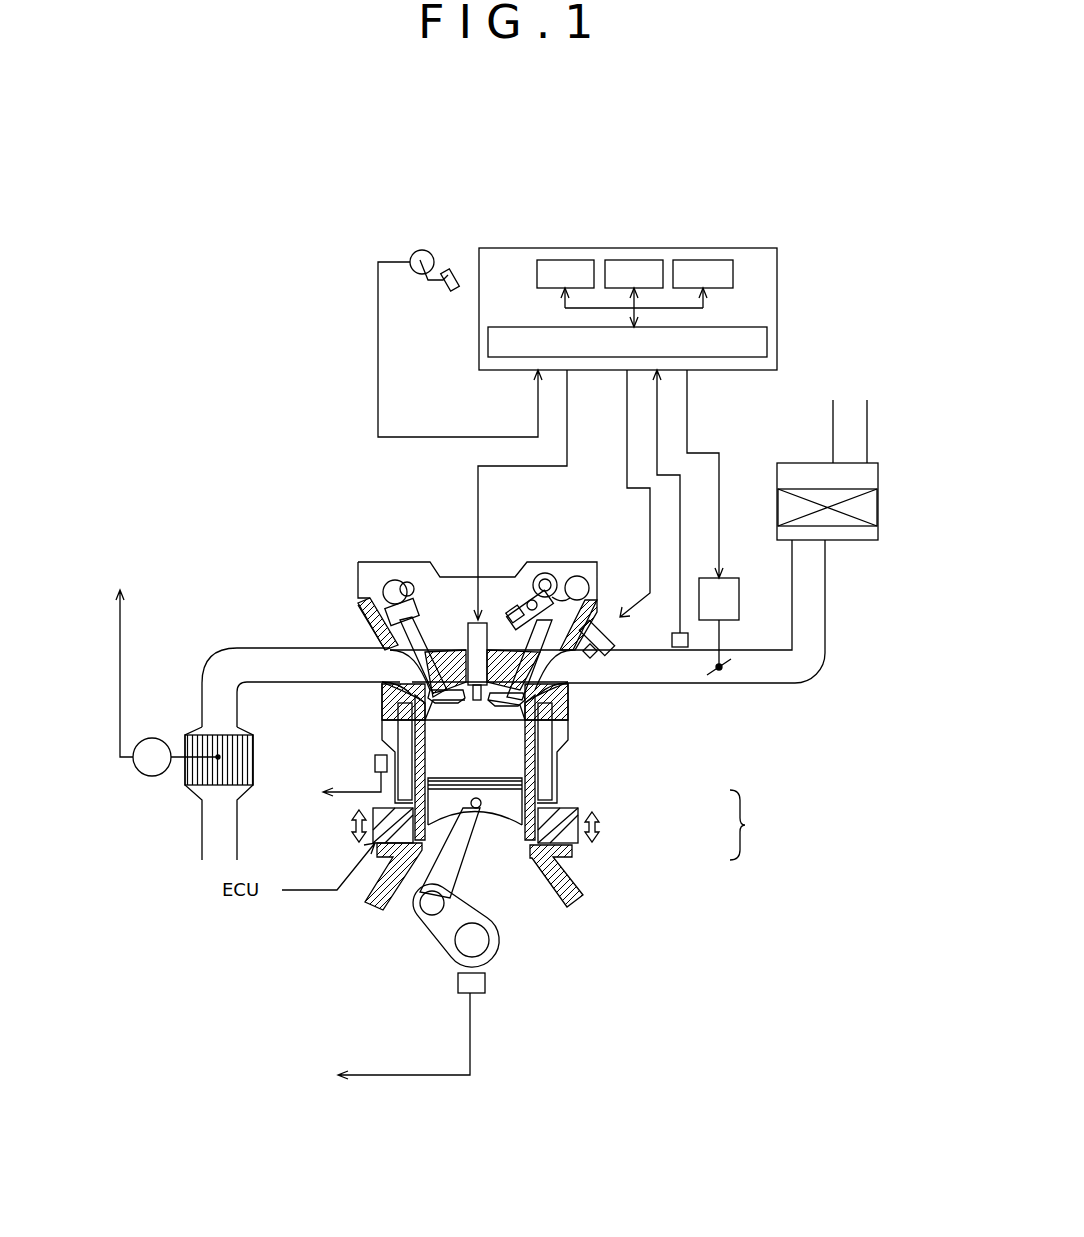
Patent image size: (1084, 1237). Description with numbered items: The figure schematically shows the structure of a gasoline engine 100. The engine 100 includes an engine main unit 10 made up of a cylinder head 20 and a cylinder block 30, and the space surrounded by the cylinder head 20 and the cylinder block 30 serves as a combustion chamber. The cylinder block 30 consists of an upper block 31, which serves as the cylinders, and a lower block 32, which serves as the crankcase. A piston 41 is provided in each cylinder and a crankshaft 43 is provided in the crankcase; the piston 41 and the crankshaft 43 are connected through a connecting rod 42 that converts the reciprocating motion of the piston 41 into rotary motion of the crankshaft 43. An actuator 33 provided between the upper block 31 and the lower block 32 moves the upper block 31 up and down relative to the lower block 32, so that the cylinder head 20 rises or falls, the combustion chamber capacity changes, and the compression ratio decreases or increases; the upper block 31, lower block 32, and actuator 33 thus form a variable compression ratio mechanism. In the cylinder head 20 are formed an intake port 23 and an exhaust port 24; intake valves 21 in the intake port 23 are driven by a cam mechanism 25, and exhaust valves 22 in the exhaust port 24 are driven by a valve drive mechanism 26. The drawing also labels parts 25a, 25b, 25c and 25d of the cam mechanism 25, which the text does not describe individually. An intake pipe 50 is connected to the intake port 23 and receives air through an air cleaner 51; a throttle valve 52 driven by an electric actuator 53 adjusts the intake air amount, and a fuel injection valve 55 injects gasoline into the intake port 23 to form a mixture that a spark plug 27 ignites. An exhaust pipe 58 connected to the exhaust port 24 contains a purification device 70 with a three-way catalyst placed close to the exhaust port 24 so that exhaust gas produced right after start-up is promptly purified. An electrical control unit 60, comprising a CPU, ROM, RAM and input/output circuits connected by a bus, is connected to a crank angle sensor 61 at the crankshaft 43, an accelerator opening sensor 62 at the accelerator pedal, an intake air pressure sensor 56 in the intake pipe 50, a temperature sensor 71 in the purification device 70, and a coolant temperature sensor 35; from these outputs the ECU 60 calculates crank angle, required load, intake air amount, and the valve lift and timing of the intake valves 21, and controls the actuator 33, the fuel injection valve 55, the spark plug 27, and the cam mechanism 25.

The gasoline engine 100 is at (811, 203).
The engine main unit 10 is at (352, 447).
The cylinder head 20 is at (573, 747).
The intake valves 21 is at (503, 617).
The exhaust valves 22 is at (430, 607).
The intake port 23 is at (570, 710).
The exhaust port 24 is at (388, 668).
The cam mechanism 25 is at (572, 553).
The valve mechanism part 25a is at (600, 607).
The valve mechanism part 25b is at (605, 640).
The cam 25c is at (543, 580).
The cam 25d is at (577, 585).
The valve drive mechanism 26 is at (390, 580).
The spark plug 27 is at (463, 620).
The cylinder block 30 is at (756, 825).
The upper block 31 is at (560, 777).
The lower block 32 is at (573, 880).
The actuator 33 is at (563, 810).
The coolant temperature sensor 35 is at (375, 765).
The piston 41 is at (497, 833).
The connecting rod 42 is at (462, 875).
The crankshaft 43 is at (497, 955).
The intake pipe 50 is at (752, 690).
The air cleaner 51 is at (849, 543).
The throttle valve 52 is at (710, 700).
The electric actuator 53 is at (727, 577).
The fuel injection valve 55 is at (608, 620).
The intake air pressure sensor 56 is at (672, 633).
The exhaust pipe 58 is at (323, 648).
The electrical control unit 60 is at (633, 248).
The crank angle sensor 61 is at (457, 982).
The accelerator opening sensor 62 is at (425, 250).
The purification device 70 is at (242, 748).
The temperature sensor 71 is at (153, 737).